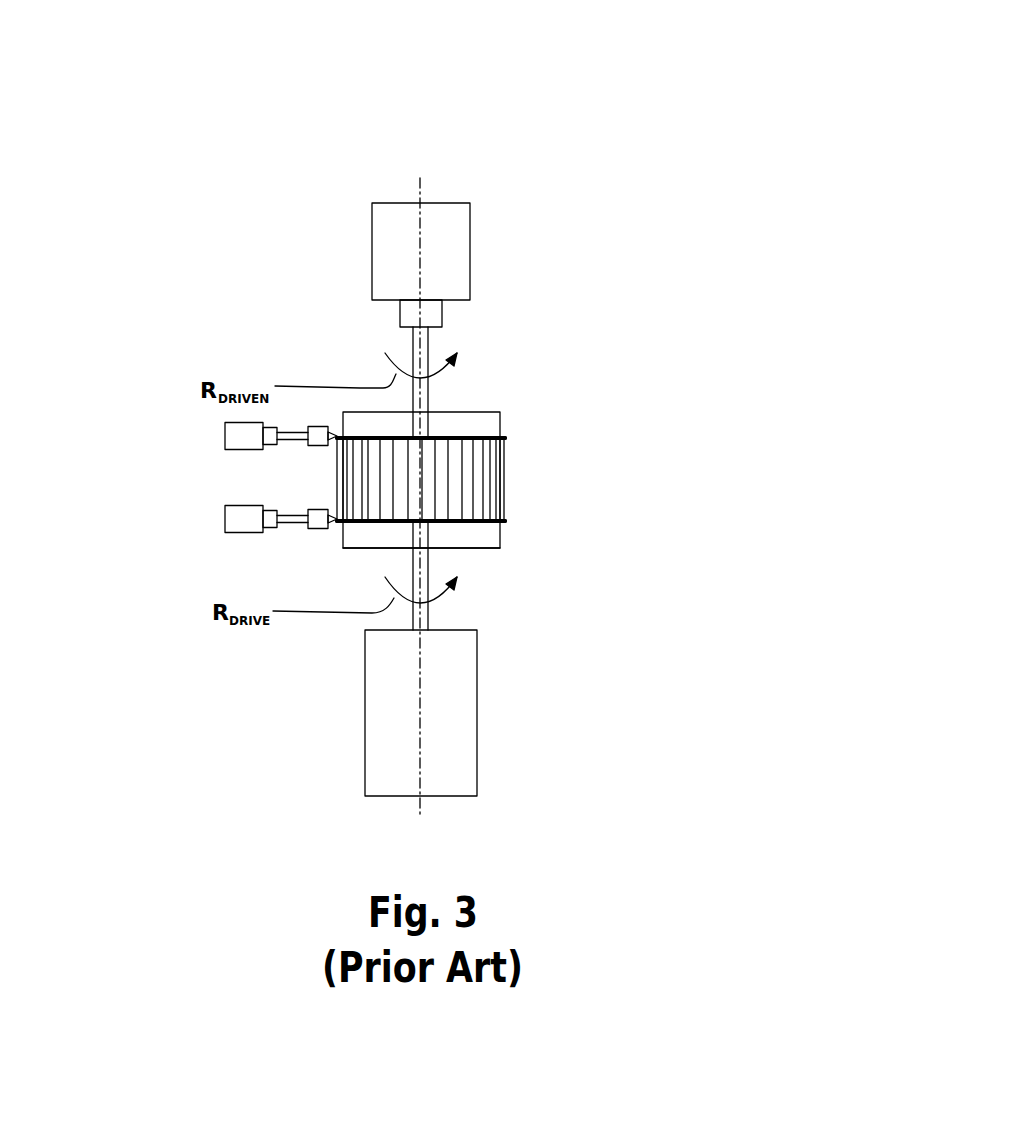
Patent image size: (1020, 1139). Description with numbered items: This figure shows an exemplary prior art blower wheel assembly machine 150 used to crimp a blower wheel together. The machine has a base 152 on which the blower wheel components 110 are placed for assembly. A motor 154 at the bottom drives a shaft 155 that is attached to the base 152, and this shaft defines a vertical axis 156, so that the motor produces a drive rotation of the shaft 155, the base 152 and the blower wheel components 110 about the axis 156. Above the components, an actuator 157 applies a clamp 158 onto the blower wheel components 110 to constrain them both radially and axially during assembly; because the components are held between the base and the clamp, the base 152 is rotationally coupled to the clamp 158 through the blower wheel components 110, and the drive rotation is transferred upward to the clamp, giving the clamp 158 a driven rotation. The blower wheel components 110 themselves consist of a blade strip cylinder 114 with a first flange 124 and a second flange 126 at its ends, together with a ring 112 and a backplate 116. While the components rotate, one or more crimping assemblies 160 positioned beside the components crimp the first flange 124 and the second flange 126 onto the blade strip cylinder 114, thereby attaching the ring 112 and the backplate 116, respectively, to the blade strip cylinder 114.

The blower wheel assembly machine 150 is at (450, 69).
The axis 156 is at (420, 176).
The actuator 157 is at (472, 272).
The clamp 158 is at (500, 411).
The backplate 116 is at (503, 429).
The second flange 126 is at (505, 437).
The blade strip cylinder 114 is at (505, 479).
The blower wheel components 110 is at (630, 470).
The first flange 124 is at (505, 521).
The ring 112 is at (504, 526).
The base 152 is at (500, 548).
The shaft 155 is at (413, 575).
The motor 154 is at (477, 712).
The crimping assemblies 160 is at (227, 437).